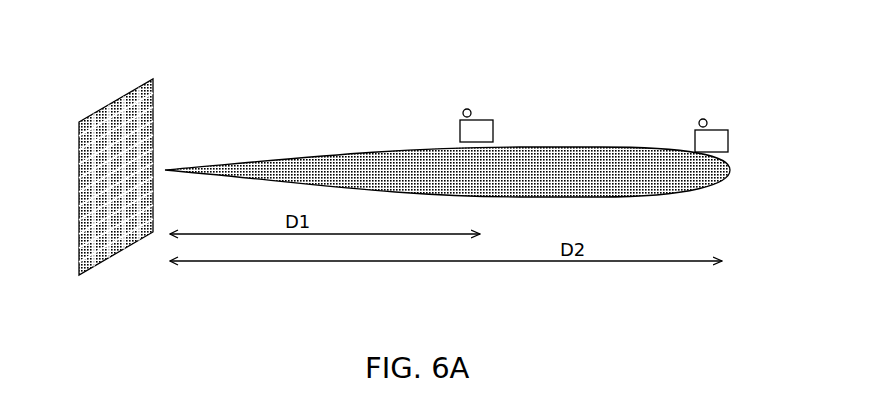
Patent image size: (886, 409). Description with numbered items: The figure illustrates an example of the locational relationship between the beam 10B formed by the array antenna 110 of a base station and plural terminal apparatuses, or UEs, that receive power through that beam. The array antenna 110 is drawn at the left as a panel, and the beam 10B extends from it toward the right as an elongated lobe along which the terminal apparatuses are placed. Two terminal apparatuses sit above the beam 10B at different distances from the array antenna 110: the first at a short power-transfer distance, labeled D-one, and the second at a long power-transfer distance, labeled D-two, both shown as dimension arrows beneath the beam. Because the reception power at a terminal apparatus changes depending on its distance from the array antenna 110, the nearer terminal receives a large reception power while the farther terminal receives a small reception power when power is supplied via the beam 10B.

The array antenna 110 is at (86, 82).
The beam 10B is at (343, 152).